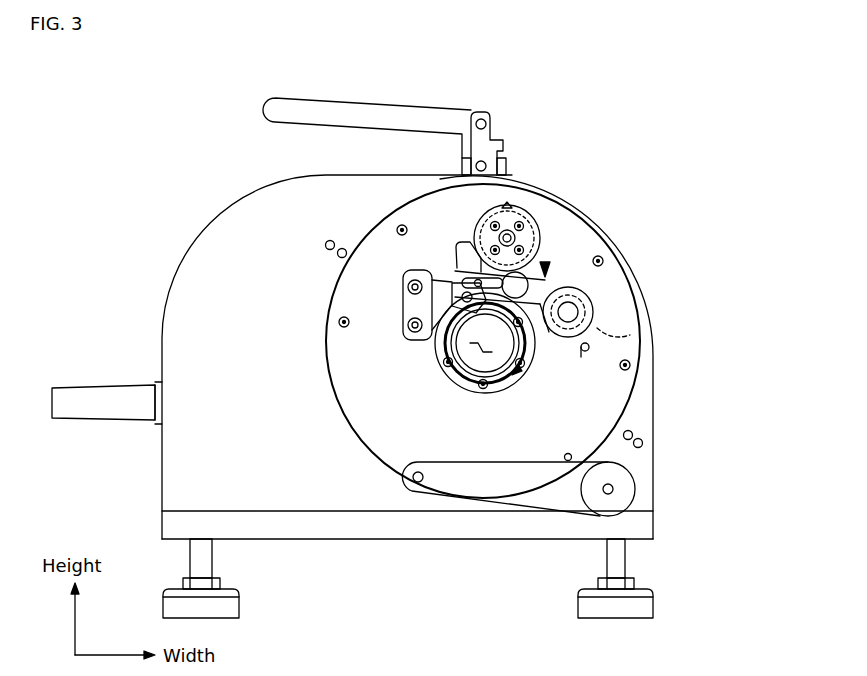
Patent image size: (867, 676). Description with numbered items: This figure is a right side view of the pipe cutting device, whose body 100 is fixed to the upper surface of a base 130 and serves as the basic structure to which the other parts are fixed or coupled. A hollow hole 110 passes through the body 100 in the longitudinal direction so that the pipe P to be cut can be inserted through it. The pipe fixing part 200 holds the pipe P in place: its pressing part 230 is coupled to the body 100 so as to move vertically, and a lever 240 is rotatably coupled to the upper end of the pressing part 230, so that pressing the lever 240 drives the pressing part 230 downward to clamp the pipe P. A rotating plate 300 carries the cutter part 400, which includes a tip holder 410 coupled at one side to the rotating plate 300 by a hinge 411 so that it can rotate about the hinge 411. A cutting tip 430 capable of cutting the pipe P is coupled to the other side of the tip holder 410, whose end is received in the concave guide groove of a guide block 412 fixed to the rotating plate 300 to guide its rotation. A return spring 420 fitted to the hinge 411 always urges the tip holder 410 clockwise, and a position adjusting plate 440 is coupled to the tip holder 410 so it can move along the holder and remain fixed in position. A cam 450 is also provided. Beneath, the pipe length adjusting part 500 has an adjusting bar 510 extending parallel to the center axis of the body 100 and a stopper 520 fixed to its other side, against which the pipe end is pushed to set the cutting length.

The body 100 is at (198, 236).
The hollow hole 110 is at (463, 360).
The base 130 is at (303, 528).
The pipe fixing part 200 is at (556, 392).
The pressing part 230 is at (509, 168).
The lever 240 is at (373, 121).
The rotating plate 300 is at (350, 365).
The cutter part 400 is at (545, 263).
The tip holder 410 is at (568, 300).
The hinge 411 is at (573, 310).
The return spring 420 is at (597, 328).
The guide block 412 is at (405, 283).
The cutting tip 430 is at (455, 272).
The position adjusting plate 440 is at (446, 268).
The cam 450 is at (522, 215).
The pipe length adjusting part 500 is at (543, 600).
The adjusting bar 510 is at (597, 501).
The stopper 520 is at (485, 487).
The pipe P is at (537, 358).